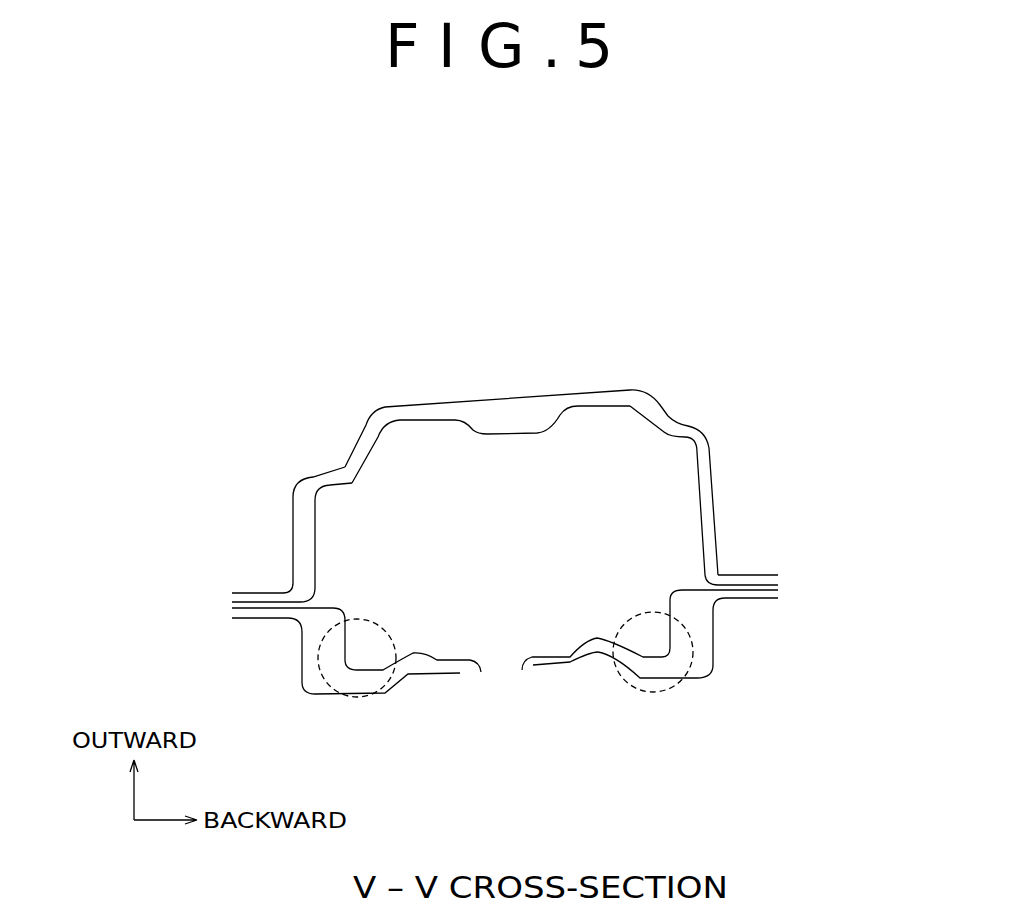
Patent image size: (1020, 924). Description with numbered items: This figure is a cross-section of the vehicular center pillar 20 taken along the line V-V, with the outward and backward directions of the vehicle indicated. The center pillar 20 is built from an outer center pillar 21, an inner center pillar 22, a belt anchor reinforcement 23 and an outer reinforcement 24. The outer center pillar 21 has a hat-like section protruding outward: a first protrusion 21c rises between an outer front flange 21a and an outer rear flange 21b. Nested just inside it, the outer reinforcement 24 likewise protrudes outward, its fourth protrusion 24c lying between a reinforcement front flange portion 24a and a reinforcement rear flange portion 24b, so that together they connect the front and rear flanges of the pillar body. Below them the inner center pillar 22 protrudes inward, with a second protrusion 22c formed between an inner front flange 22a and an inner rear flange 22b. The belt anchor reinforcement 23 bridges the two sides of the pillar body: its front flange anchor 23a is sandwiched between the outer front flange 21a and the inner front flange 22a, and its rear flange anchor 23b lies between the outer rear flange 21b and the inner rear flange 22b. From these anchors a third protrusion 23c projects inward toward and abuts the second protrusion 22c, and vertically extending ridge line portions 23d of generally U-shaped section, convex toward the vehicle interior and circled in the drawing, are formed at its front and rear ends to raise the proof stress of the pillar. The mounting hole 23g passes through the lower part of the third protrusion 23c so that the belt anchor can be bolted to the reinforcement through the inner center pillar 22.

The center pillar 20 is at (738, 372).
The outer center pillar 21 is at (508, 393).
The outer front flange 21a is at (238, 593).
The outer rear flange 21b is at (777, 570).
The first protrusion 21c is at (417, 402).
The inner center pillar 22 is at (435, 688).
The inner front flange 22a is at (252, 621).
The inner rear flange 22b is at (727, 610).
The second protrusion 22c is at (687, 678).
The belt anchor reinforcement 23 is at (557, 645).
The front flange anchor 23a is at (232, 613).
The rear flange anchor 23b is at (780, 597).
The third protrusion 23c is at (577, 675).
The ridge line portions 23d is at (367, 672).
The mounting hole 23g is at (481, 672).
The outer reinforcement 24 is at (592, 420).
The reinforcement front flange portion 24a is at (287, 593).
The reinforcement rear flange portion 24b is at (722, 570).
The fourth protrusion 24c is at (573, 407).